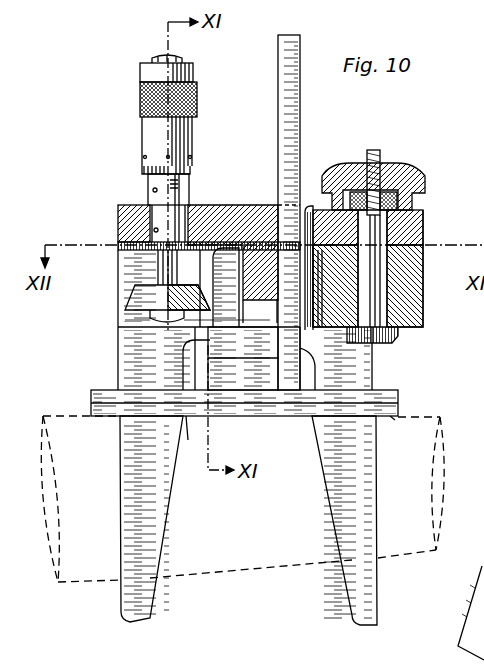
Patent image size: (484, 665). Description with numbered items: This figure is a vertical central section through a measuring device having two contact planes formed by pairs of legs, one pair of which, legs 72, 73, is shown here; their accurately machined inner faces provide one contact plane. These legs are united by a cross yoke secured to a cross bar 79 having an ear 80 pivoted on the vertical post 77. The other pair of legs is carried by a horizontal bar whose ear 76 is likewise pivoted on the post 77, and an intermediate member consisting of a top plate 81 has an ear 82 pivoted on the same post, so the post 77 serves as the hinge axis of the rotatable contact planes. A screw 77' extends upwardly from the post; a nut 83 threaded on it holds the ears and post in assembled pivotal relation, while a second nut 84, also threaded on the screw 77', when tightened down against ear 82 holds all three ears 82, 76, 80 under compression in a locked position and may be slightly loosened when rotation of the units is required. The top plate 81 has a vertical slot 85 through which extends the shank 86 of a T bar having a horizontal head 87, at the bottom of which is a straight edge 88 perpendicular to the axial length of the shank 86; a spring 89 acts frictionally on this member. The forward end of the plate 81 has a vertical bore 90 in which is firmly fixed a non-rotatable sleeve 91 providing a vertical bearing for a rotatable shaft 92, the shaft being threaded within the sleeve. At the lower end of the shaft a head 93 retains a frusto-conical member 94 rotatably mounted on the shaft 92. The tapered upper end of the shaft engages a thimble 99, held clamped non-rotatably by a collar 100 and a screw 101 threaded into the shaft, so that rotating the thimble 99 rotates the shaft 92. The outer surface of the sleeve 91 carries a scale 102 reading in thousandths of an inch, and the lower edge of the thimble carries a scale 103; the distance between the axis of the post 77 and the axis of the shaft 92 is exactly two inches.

The leg 72 is at (128, 549).
The leg 73 is at (360, 487).
The ear 76 is at (424, 272).
The vertical post 77 is at (408, 284).
The screw 77' is at (390, 163).
The cross bar 79 is at (262, 499).
The ear 80 is at (420, 312).
The top plate 81 is at (244, 216).
The ear 82 is at (424, 225).
The nut 83 is at (397, 188).
The nut 84 is at (428, 186).
The vertical slot 85 is at (334, 240).
The shank 86 is at (278, 107).
The horizontal head 87 is at (380, 398).
The straight edge 88 is at (396, 418).
The spring 89 is at (308, 210).
The vertical bore 90 is at (118, 219).
The sleeve 91 is at (170, 216).
The shaft 92 is at (165, 262).
The head 93 is at (160, 313).
The frusto-conical member 94 is at (130, 299).
The thimble 99 is at (198, 92).
The collar 100 is at (148, 73).
The screw 101 is at (184, 60).
The scale 102 is at (183, 176).
The scale 103 is at (146, 171).